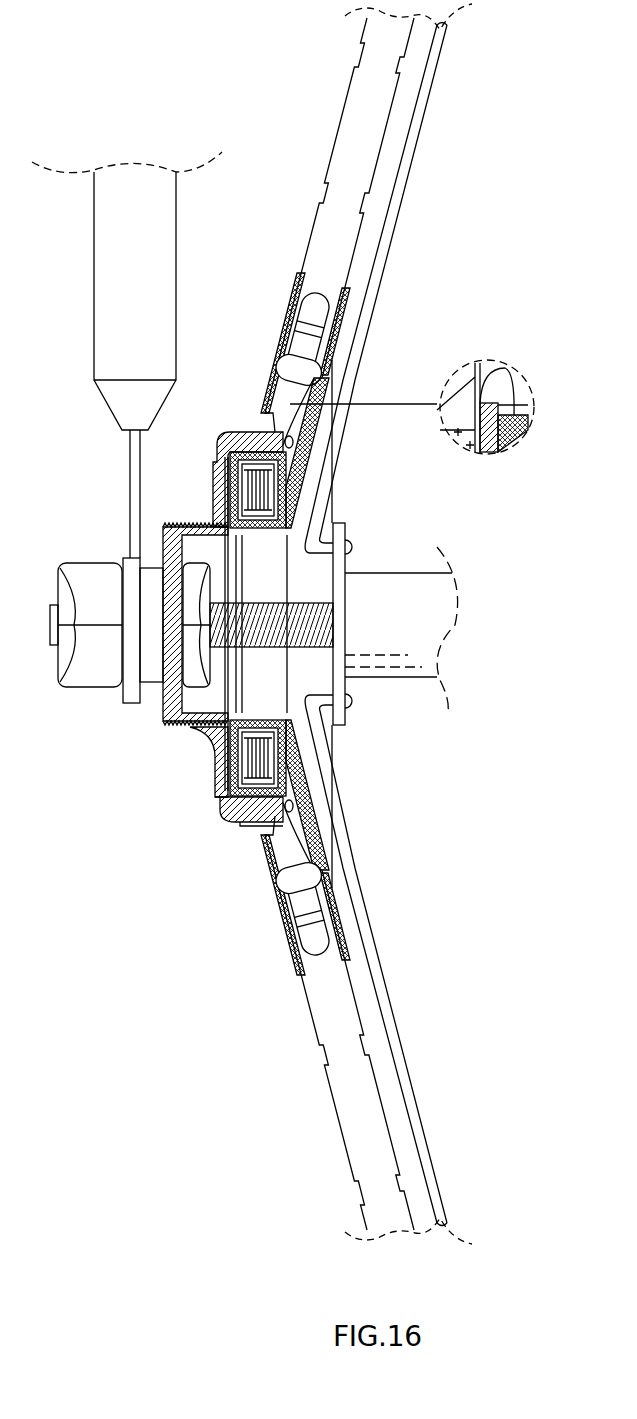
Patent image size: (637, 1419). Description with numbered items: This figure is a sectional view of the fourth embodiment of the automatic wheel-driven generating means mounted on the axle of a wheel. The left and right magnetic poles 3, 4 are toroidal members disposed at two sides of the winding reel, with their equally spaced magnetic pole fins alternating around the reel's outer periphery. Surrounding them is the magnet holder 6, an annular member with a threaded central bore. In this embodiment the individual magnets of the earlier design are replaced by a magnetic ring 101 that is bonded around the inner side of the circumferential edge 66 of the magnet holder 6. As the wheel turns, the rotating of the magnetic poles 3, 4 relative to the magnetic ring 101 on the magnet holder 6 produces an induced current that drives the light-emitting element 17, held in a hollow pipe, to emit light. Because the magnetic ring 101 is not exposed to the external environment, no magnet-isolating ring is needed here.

The left magnetic pole 3 is at (238, 472).
The right magnetic pole 4 is at (283, 516).
The magnet holder 6 is at (200, 743).
The magnetic ring 101 is at (218, 808).
The circumferential edge 66 is at (255, 826).
The light-emitting element 17 is at (307, 936).